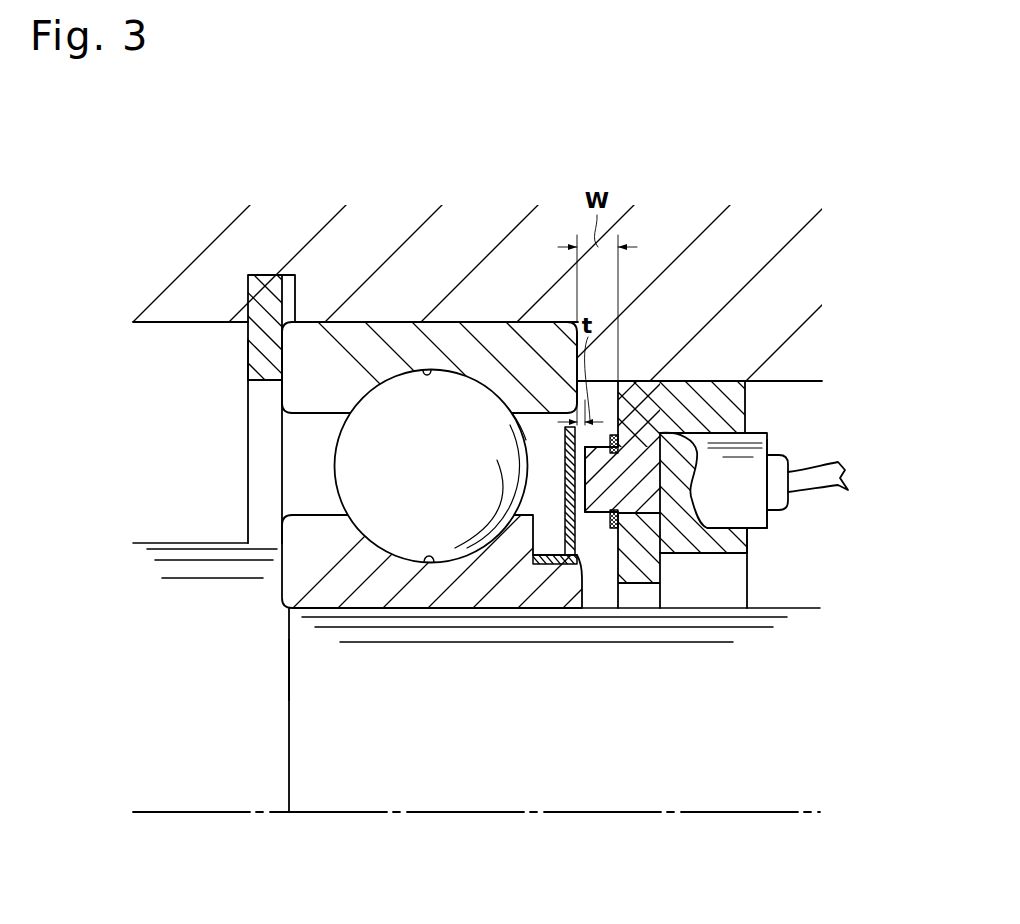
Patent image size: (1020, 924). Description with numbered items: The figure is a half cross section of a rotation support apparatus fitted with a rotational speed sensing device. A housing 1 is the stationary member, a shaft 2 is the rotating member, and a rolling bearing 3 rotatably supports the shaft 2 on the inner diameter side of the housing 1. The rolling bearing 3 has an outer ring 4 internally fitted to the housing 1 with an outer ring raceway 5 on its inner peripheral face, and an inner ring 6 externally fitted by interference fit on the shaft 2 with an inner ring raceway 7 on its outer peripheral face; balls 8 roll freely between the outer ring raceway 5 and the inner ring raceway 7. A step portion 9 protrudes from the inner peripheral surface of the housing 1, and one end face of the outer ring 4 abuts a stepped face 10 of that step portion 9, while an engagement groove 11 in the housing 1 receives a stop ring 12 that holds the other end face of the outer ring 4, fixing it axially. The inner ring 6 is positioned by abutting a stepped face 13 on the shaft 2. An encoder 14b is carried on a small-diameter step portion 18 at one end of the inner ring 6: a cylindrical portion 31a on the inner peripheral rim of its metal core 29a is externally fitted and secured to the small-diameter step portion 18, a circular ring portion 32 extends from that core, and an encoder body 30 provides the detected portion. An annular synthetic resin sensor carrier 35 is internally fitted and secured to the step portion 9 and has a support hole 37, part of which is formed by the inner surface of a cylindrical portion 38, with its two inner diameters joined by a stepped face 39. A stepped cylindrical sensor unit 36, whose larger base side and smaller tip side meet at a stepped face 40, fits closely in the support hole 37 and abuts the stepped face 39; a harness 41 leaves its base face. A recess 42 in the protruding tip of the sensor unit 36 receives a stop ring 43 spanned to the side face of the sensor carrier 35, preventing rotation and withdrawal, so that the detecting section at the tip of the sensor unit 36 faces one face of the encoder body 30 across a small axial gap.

The housing 1 is at (345, 265).
The shaft 2 is at (434, 776).
The rolling bearing 3 is at (333, 496).
The outer ring 4 is at (368, 337).
The outer ring raceway 5 is at (427, 370).
The inner ring 6 is at (366, 590).
The inner ring raceway 7 is at (429, 556).
The balls 8 is at (380, 432).
The step portion 9 is at (742, 357).
The stepped face 10 is at (577, 395).
The engagement groove 11 is at (262, 275).
The stop ring 12 is at (255, 357).
The stepped face 13 is at (290, 650).
The encoder 14b is at (565, 513).
The small-diameter step portion 18 is at (570, 565).
The metal core 29a is at (527, 423).
The encoder body 30 is at (565, 487).
The cylindrical portion 31a is at (578, 612).
The circular ring portion 32 is at (565, 448).
The sensor carrier 35 is at (730, 410).
The sensor unit 36 is at (755, 508).
The support hole 37 is at (712, 520).
The cylindrical portion 38 is at (737, 542).
The stepped face 39 is at (700, 467).
The stepped face 40 is at (640, 505).
The harness 41 is at (818, 480).
The recess 42 is at (670, 380).
The stop ring 43 is at (612, 530).